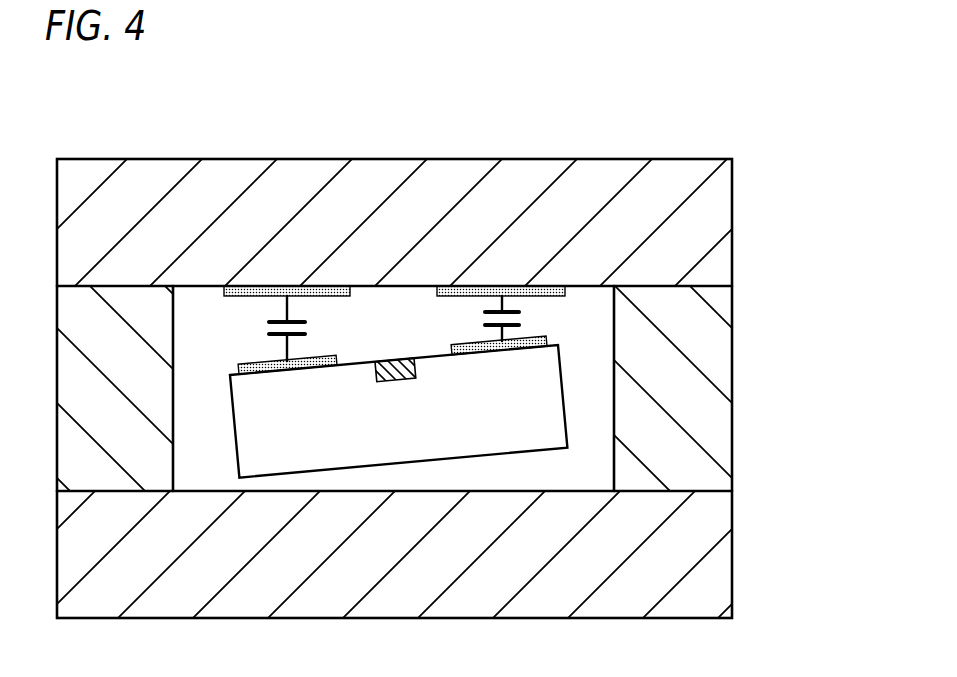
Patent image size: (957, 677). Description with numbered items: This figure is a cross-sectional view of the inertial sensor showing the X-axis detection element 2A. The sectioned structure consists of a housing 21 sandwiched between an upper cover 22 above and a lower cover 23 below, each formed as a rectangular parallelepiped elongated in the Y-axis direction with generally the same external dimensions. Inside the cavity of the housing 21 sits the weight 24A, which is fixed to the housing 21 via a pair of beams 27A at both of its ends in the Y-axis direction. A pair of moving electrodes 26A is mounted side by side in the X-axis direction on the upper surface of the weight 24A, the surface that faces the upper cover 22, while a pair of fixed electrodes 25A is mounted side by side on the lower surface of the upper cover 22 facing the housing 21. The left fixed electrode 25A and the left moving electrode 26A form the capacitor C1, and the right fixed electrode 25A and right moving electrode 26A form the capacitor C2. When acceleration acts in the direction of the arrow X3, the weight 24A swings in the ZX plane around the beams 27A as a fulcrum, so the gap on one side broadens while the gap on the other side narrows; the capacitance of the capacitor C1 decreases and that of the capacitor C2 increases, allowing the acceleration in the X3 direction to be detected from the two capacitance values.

The X-axis detection element 2A is at (78, 143).
The housing 21 is at (717, 363).
The upper cover 22 is at (717, 216).
The lower cover 23 is at (716, 567).
The weight 24A is at (250, 440).
The fixed electrode 25A is at (240, 298).
The moving electrode 26A is at (239, 369).
The beam 27A is at (400, 382).
The capacitor C1 is at (304, 328).
The capacitor C2 is at (486, 318).
The arrow X3 is at (307, 123).